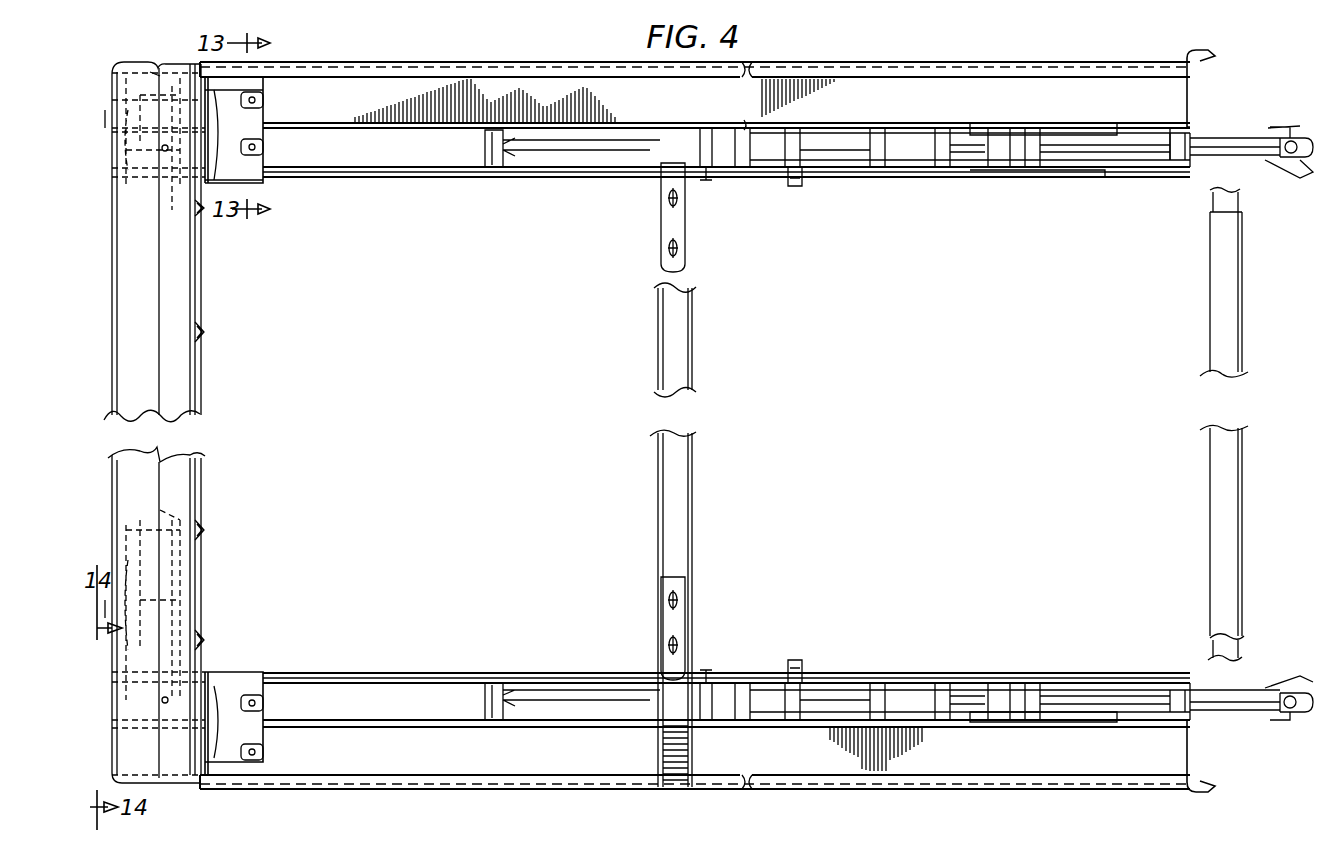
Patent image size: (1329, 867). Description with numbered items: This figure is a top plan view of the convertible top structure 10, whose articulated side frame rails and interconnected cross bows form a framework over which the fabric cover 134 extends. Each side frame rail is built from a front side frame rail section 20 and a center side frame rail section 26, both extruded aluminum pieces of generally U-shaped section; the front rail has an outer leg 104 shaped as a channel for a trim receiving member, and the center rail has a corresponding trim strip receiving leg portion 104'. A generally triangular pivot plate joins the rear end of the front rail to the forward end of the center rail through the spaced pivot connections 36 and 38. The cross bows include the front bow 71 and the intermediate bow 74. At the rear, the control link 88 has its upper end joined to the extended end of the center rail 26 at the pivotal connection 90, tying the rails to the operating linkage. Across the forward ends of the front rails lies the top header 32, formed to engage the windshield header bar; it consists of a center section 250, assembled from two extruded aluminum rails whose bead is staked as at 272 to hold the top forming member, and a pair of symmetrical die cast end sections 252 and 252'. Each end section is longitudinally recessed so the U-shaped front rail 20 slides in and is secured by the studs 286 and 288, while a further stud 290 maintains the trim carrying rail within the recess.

The top structure 10 is at (457, 316).
The front side frame rail section 20 is at (517, 178).
The center side frame rail section 26 is at (880, 173).
The top header 32 is at (180, 392).
The pivot connection 36 is at (718, 180).
The pivot connection 38 is at (793, 185).
The front bow 71 is at (675, 224).
The intermediate bow 74 is at (1223, 200).
The control link 88 is at (1314, 140).
The pivotal connection 90 is at (1282, 168).
The outer leg 104 is at (1043, 133).
The outer or trim strip receiving leg portion 104' is at (1043, 718).
The fabric cover 134 is at (678, 474).
The center section 250 is at (188, 490).
The end section 252 is at (263, 702).
The end section 252' is at (277, 146).
The staked head 272 is at (207, 210).
The stud 286 is at (256, 703).
The stud 288 is at (167, 703).
The stud 290 is at (256, 752).